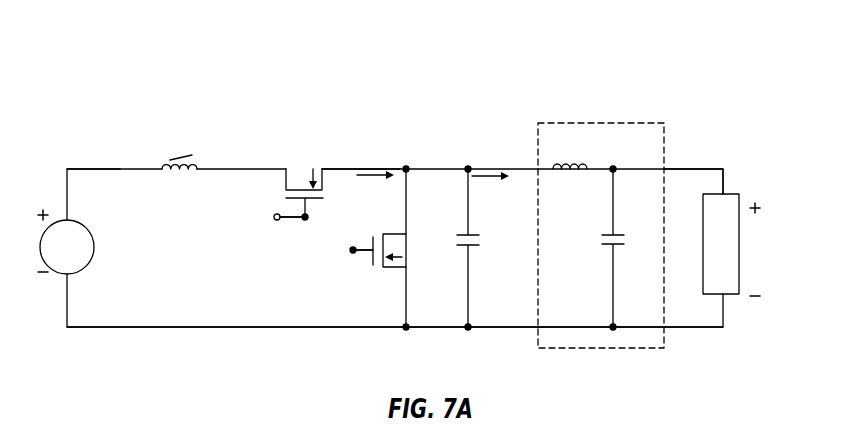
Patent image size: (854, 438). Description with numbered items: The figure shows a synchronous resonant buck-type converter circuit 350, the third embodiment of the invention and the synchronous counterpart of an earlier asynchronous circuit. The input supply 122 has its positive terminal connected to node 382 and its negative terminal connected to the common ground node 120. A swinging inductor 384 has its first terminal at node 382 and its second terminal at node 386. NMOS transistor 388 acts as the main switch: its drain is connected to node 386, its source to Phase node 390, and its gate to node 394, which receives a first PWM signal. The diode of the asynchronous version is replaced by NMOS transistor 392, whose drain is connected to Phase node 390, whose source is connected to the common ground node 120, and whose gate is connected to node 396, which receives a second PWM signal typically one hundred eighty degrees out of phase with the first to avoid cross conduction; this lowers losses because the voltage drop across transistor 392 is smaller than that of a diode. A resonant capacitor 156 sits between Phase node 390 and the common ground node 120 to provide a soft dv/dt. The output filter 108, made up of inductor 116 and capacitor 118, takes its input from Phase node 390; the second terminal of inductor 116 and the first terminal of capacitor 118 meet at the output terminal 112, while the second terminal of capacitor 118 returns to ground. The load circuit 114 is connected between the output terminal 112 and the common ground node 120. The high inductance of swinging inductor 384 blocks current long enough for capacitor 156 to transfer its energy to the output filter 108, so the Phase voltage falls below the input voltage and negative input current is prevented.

The circuit 350 is at (661, 70).
The output filter 108 is at (638, 123).
The node 382 is at (90, 169).
The swinging inductor 384 is at (178, 173).
The node 386 is at (253, 169).
The NMOS transistor 388 is at (325, 172).
The Phase node 390 is at (380, 167).
The NMOS transistor 392 is at (400, 270).
The node 394 is at (275, 219).
The node 396 is at (351, 251).
The input supply 122 is at (94, 254).
The common ground node 120 is at (186, 327).
The capacitor 156 is at (472, 246).
The inductor 116 is at (568, 174).
The capacitor 118 is at (605, 246).
The output terminal 112 is at (722, 168).
The load circuit 114 is at (740, 255).